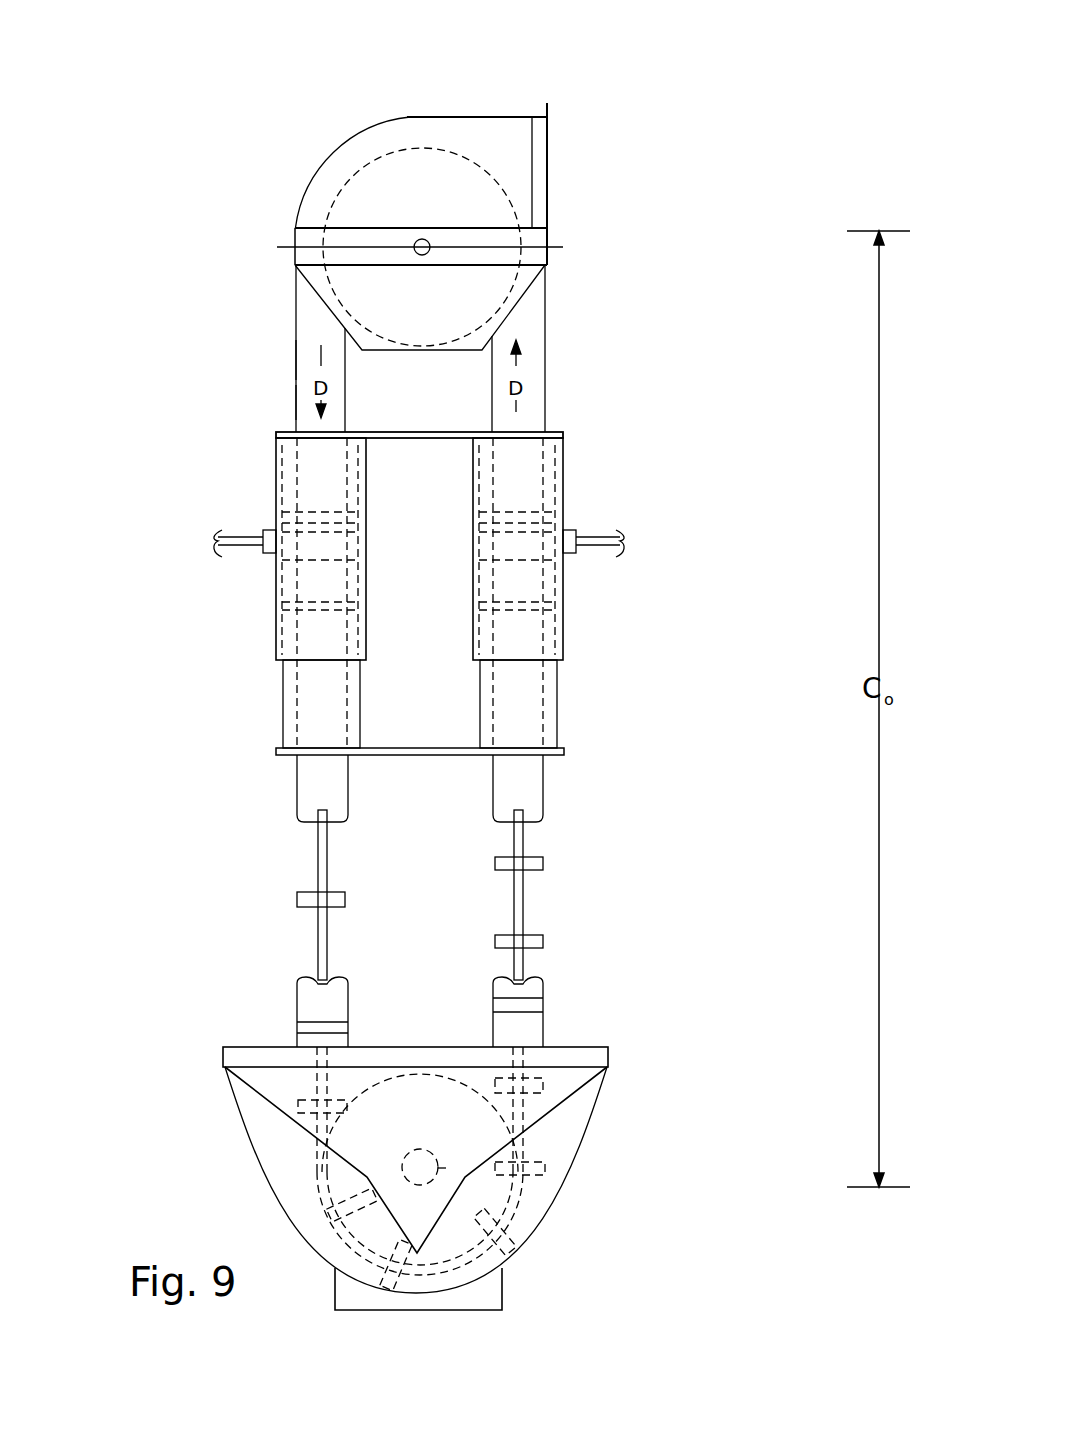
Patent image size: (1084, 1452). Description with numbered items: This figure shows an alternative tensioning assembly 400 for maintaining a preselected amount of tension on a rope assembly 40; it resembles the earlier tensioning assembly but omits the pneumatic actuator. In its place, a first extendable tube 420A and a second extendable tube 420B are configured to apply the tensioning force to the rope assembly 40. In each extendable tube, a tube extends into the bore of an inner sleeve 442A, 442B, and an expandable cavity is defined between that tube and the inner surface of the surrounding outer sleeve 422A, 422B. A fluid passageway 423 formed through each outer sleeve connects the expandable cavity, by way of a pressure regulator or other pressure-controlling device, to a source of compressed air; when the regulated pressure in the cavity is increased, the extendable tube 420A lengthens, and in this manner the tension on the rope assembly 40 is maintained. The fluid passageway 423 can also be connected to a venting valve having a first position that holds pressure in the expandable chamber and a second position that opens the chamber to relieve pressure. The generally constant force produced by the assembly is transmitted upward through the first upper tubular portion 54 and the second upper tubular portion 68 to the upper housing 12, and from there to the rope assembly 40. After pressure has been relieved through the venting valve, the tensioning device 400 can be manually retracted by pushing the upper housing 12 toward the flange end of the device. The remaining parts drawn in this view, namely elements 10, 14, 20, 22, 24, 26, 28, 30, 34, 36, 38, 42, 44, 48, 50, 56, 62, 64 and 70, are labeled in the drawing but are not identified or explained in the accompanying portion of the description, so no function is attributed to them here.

The agricultural implement assembly 10 is at (772, 37).
The upper housing 12 is at (278, 142).
The lower housing 14 is at (224, 1203).
The top plate 20 is at (436, 116).
The left column 22 is at (296, 323).
The cross bar 24 is at (293, 258).
The bar top edge 26 is at (293, 229).
The right side plate 28 is at (548, 150).
The V-shaped chute 30 is at (278, 1109).
The drive pulley 34 is at (473, 160).
The lower pulley belt 36 is at (505, 1235).
The drive shaft 38 is at (421, 239).
The rope assembly 40 is at (316, 870).
The collar 42 is at (297, 897).
The bottom box 44 is at (475, 1312).
The left bracket 48 is at (298, 990).
The left bracket fastener 50 is at (298, 1036).
The first upper tubular portion 54 is at (546, 400).
The shaft 56 is at (275, 268).
The right bracket 62 is at (545, 993).
The right bracket fastener 64 is at (545, 1033).
The second upper tubular portion 68 is at (296, 400).
The column upper portion 70 is at (296, 358).
The tensioning assembly 400 is at (581, 483).
The first extendable tube 420A is at (257, 499).
The second extendable tube 420B is at (582, 605).
The outer sleeve 422A is at (276, 452).
The outer sleeve 422B is at (563, 512).
The fluid passageway 423 is at (267, 553).
The inner sleeve 442A is at (282, 725).
The inner sleeve 442B is at (545, 793).